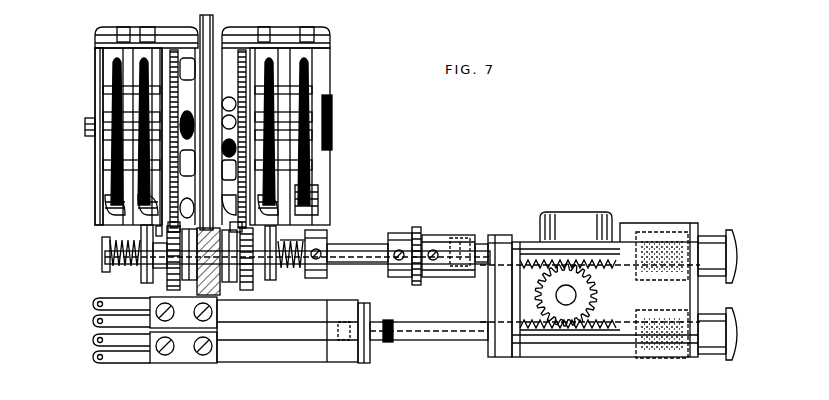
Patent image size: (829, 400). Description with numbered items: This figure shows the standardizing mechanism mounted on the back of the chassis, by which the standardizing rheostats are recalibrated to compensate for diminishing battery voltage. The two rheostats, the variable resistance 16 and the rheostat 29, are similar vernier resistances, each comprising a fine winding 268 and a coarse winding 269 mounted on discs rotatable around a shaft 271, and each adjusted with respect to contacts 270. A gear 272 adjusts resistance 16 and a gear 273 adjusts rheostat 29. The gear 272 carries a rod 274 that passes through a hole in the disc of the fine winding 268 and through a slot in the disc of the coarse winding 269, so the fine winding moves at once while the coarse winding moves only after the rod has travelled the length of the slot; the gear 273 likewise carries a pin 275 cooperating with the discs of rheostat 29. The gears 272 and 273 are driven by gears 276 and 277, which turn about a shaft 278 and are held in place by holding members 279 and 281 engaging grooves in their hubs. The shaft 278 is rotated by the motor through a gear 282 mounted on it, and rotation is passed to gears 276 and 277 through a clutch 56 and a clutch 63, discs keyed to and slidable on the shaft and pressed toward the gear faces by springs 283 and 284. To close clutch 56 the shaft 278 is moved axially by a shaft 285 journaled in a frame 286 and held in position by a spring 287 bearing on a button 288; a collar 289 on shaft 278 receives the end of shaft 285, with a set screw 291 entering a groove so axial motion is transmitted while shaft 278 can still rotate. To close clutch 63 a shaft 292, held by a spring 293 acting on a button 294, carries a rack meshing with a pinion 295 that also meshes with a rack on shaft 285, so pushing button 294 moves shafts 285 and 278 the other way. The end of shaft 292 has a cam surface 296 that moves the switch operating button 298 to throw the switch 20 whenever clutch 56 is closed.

The rheostat 29 is at (58, 62).
The variable resistance 16 is at (355, 55).
The contacts 270 is at (150, 40).
The coarse winding 269 is at (112, 62).
The fine winding 268 is at (208, 128).
The pin 275 is at (95, 88).
The shaft 271 is at (85, 128).
The rod 274 is at (320, 192).
The gear 273 is at (170, 220).
The gear 272 is at (218, 230).
The holding member 281 is at (153, 234).
The clutch 56 is at (272, 270).
The spring 284 is at (108, 268).
The clutch 63 is at (146, 272).
The gear 277 is at (170, 288).
The gear 276 is at (252, 286).
The spring 283 is at (314, 278).
The holding member 279 is at (305, 238).
The shaft 278 is at (352, 246).
The gear 282 is at (412, 230).
The collar 289 is at (432, 234).
The set screw 291 is at (464, 238).
The shaft 285 is at (490, 235).
The frame 286 is at (575, 228).
The spring 287 is at (642, 232).
The pinion 295 is at (599, 296).
The spring 293 is at (664, 350).
The button 288 is at (726, 238).
The button 294 is at (730, 326).
The switch 20 is at (186, 356).
The cam surface 296 is at (348, 342).
The switch operating button 298 is at (368, 356).
The shaft 292 is at (438, 340).